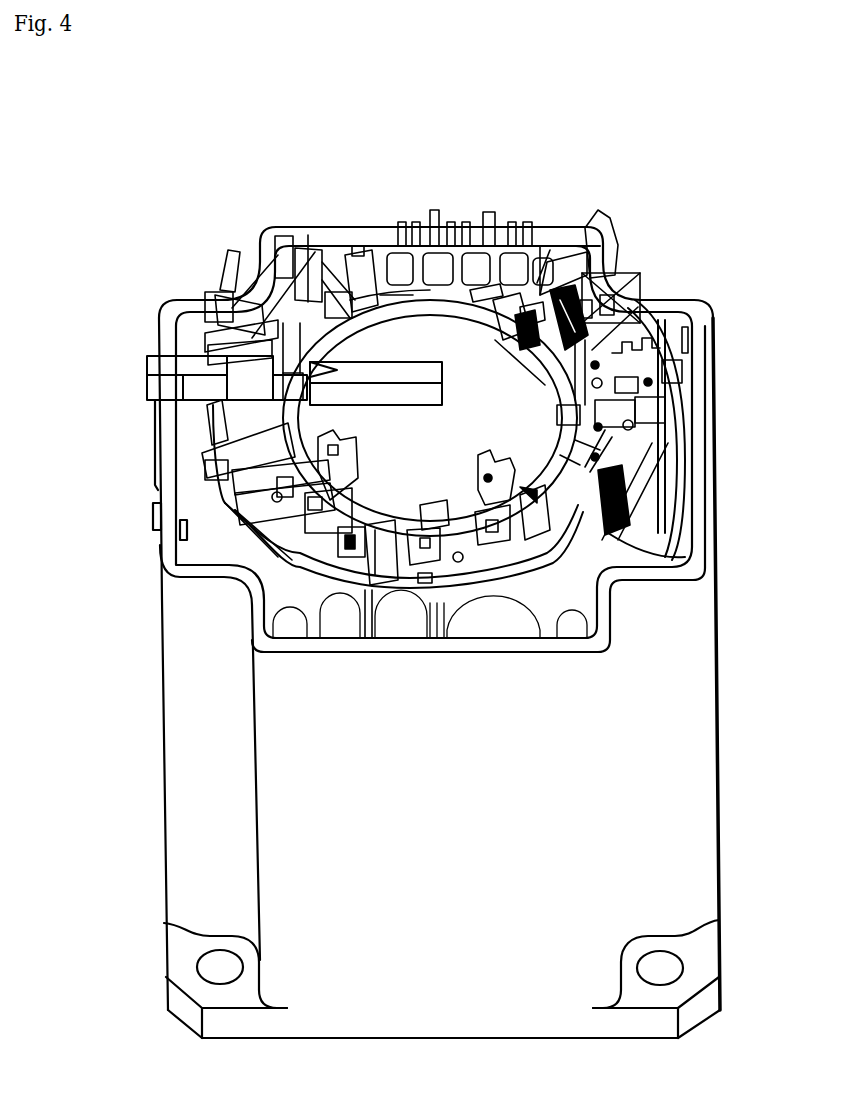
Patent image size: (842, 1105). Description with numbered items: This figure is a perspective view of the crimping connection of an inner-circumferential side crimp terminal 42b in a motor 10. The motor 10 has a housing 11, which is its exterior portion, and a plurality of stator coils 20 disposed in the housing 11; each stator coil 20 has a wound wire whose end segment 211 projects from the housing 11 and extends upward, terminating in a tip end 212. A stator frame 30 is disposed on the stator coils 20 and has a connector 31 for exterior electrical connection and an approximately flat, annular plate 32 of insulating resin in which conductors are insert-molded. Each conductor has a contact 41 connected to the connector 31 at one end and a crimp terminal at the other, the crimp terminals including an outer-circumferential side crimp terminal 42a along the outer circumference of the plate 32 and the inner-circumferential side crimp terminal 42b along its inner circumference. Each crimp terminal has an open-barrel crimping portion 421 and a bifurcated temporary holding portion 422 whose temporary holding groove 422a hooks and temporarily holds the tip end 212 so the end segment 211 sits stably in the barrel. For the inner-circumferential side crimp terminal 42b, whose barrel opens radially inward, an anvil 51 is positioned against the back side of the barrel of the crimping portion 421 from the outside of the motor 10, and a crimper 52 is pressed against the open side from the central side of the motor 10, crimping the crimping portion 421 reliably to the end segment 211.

The motor 10 is at (626, 183).
The housing 11 is at (716, 890).
The stator coil 20 is at (612, 531).
The end segment 211 is at (389, 319).
The tip end 212 is at (389, 328).
The stator frame 30 is at (537, 280).
The connector 31 is at (510, 224).
The plate 32 is at (610, 307).
The contact 41 is at (480, 208).
The outer-circumferential side crimp terminal 42a is at (502, 477).
The inner-circumferential side crimp terminal 42b is at (206, 148).
The crimping portion 421 is at (317, 330).
The temporary holding portion 422 is at (283, 337).
The temporary holding groove 422a is at (275, 558).
The anvil 51 is at (183, 367).
The crimper 52 is at (393, 371).